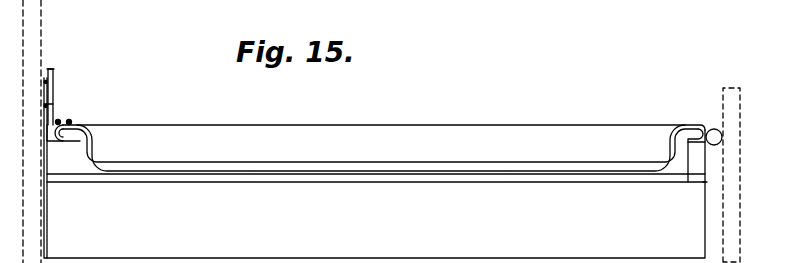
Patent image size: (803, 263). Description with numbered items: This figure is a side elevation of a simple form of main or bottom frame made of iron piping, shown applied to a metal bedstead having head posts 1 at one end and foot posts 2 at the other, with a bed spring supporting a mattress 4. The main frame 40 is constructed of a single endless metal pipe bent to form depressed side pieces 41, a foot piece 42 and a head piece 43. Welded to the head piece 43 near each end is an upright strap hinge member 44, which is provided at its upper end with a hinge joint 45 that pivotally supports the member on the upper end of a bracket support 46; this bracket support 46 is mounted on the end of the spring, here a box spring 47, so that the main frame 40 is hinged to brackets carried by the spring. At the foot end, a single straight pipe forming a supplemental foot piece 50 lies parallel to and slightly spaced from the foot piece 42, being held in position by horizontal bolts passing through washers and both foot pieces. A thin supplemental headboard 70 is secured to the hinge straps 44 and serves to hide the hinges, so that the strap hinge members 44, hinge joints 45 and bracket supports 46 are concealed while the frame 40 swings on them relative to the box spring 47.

The head posts 1 is at (40, 27).
The foot posts 2 is at (723, 98).
The mattress 4 is at (418, 152).
The main frame 40 is at (490, 158).
The depressed side pieces 41 is at (443, 177).
The foot piece 42 is at (700, 130).
The head piece 43 is at (73, 125).
The upright strap hinge member 44 is at (50, 98).
The hinge joint 45 is at (48, 66).
The bracket support 46 is at (50, 106).
The box spring 47 is at (374, 228).
The supplemental foot piece 50 is at (720, 132).
The supplemental headboard 70 is at (54, 80).